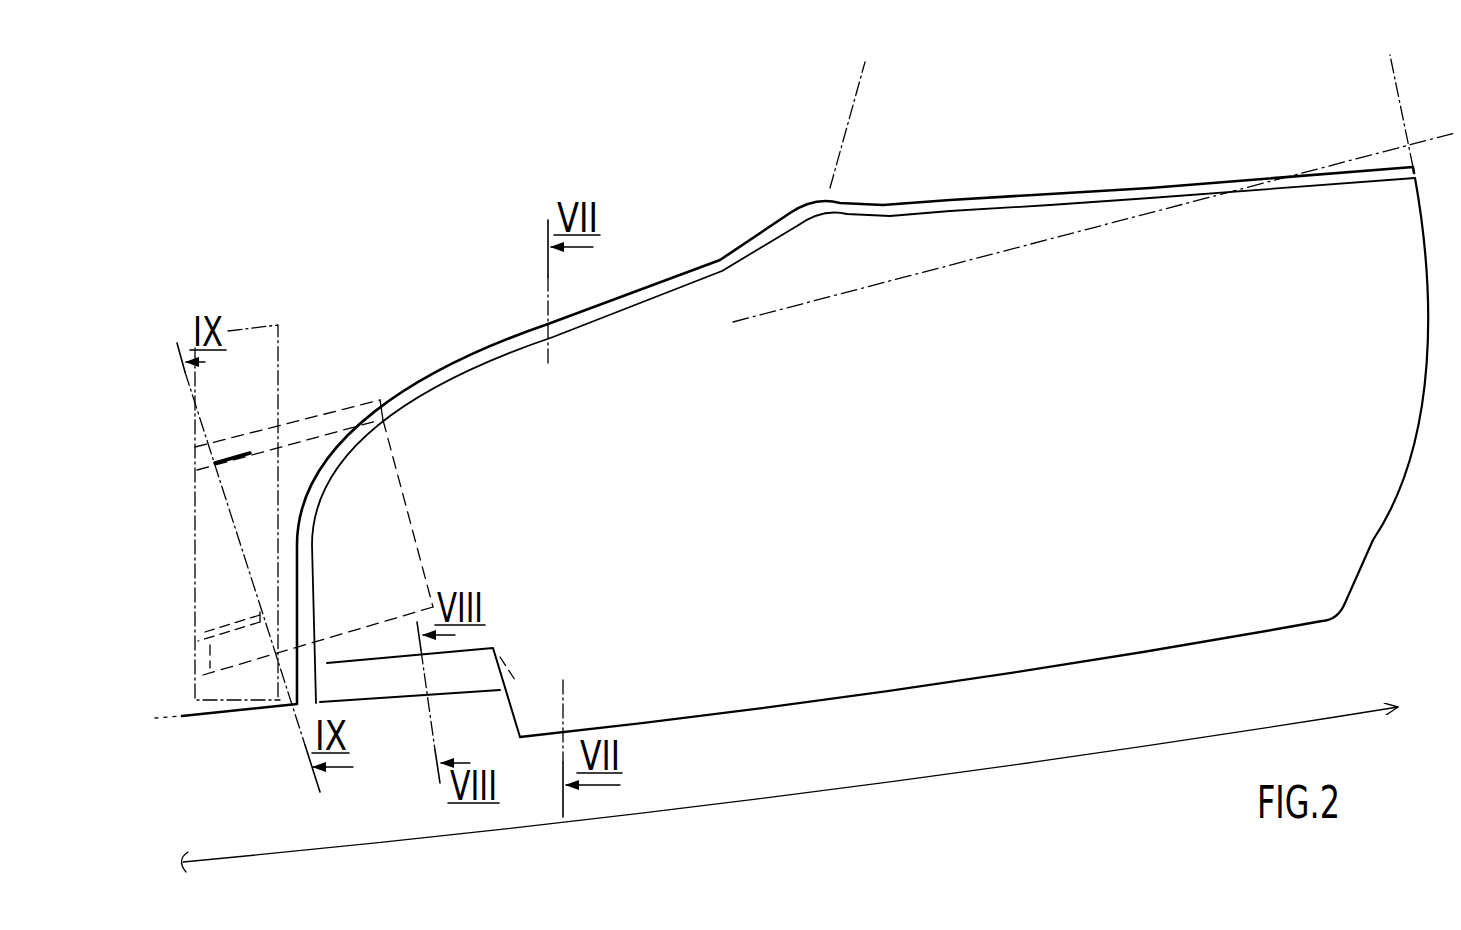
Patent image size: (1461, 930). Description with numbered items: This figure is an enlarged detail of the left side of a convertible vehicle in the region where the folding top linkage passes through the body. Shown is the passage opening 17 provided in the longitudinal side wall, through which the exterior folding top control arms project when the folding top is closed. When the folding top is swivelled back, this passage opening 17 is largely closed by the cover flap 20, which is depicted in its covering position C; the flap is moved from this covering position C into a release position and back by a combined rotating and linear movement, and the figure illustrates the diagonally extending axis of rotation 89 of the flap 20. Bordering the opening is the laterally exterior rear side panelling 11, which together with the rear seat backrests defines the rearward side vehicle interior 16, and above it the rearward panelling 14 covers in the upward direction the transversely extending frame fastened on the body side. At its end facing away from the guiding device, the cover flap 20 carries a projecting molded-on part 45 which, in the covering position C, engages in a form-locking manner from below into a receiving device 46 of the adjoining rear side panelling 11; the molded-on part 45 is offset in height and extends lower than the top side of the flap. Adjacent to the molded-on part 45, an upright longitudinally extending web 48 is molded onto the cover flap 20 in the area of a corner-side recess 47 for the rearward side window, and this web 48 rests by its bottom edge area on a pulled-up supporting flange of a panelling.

The laterally exterior rear side panelling 11 is at (730, 250).
The rearward panelling 14 is at (1081, 190).
The rearward side vehicle interior 16 is at (685, 108).
The passage opening 17 is at (793, 708).
The cover flap 20 is at (877, 658).
The molded-on part 45 is at (299, 411).
The receiving device 46 is at (259, 337).
The corner-side recess 47 is at (481, 699).
The web 48 is at (403, 687).
The axis of rotation 89 is at (1057, 240).
The covering position C is at (1105, 668).